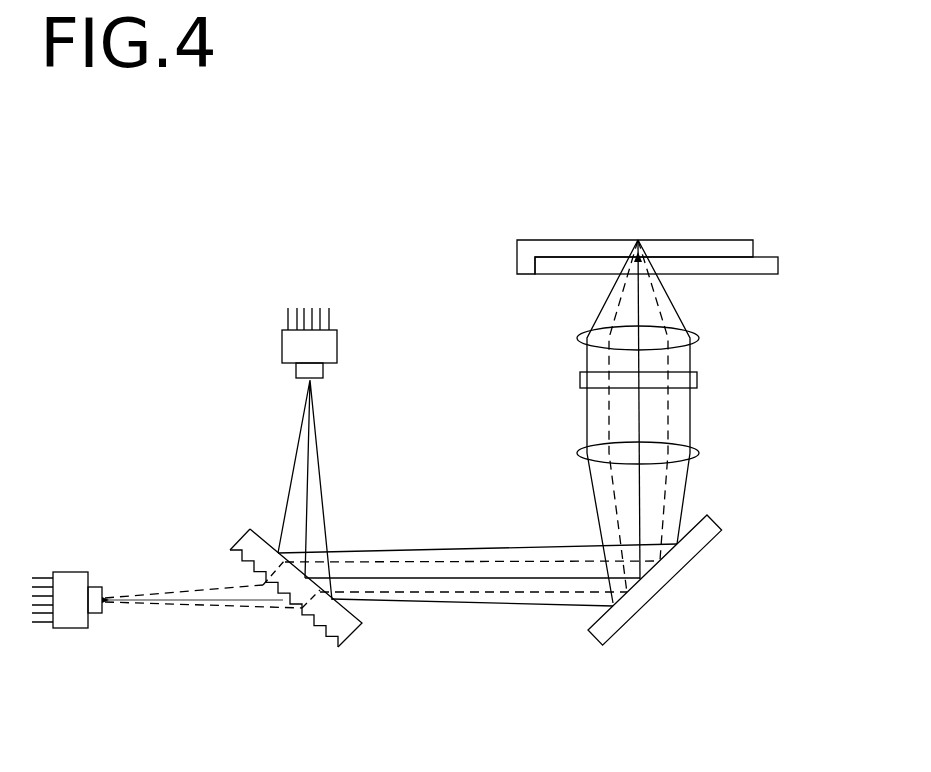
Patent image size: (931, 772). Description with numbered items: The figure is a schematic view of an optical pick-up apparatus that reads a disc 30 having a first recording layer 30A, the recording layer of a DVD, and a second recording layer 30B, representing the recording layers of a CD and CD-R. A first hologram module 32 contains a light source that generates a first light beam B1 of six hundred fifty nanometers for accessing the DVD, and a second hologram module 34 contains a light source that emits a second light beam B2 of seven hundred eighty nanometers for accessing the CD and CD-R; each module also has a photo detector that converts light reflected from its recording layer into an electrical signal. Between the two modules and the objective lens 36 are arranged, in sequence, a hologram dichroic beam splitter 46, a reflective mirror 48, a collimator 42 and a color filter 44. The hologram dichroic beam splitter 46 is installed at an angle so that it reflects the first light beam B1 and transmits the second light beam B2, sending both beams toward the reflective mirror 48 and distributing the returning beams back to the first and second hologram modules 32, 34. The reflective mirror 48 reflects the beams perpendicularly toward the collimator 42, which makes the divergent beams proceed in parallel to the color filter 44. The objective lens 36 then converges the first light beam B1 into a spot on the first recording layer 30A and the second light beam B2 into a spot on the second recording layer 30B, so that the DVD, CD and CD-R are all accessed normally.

The disc 30 is at (543, 180).
The first recording layer 30A is at (770, 258).
The second recording layer 30B is at (700, 243).
The first hologram module 32 is at (337, 345).
The second hologram module 34 is at (68, 570).
The objective lens 36 is at (688, 335).
The collimator 42 is at (588, 452).
The color filter 44 is at (697, 387).
The hologram dichroic beam splitter 46 is at (330, 623).
The reflective mirror 48 is at (658, 587).
The first light beam B1 is at (321, 488).
The second light beam B2 is at (183, 590).